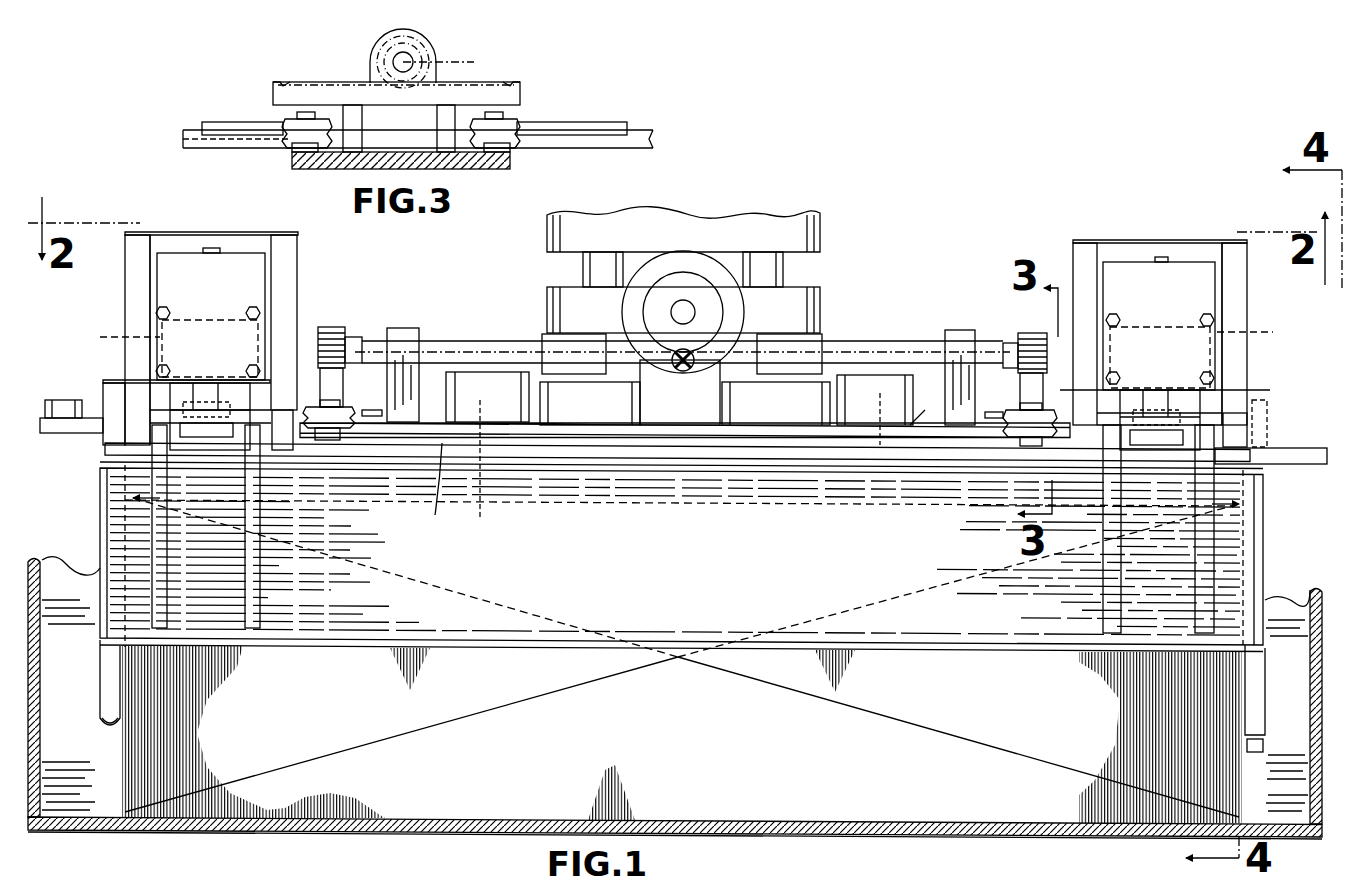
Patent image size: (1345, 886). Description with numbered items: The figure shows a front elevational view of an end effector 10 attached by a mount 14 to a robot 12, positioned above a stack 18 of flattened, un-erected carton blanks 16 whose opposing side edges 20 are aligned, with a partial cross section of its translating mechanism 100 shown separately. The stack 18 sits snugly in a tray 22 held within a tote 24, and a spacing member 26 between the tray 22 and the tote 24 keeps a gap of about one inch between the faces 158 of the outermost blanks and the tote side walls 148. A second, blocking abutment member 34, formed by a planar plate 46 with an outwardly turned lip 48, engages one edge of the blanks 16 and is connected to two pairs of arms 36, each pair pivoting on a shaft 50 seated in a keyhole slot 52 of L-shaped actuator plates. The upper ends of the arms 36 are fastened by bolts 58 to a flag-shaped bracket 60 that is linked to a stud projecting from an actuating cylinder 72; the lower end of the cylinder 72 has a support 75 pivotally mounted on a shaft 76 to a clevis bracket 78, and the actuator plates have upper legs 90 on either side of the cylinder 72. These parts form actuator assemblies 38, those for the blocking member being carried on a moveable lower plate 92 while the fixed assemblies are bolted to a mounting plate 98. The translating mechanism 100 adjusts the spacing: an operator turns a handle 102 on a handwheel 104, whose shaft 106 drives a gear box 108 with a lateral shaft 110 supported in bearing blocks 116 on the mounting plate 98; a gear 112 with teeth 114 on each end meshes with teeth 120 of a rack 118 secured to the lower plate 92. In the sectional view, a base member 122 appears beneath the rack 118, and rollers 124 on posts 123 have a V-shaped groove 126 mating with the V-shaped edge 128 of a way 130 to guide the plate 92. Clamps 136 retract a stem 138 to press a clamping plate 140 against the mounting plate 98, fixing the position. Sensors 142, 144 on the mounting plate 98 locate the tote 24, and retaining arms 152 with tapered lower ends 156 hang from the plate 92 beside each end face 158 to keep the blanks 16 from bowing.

In FIG. 1, the end effector 10 is at (982, 182).
In FIG. 1, the robot 12 is at (740, 213).
In FIG. 1, the mount 14 is at (790, 290).
In FIG. 1, the carton blanks 16 is at (1120, 830).
In FIG. 1, the stack 18 is at (262, 830).
In FIG. 1, the side edges 20 is at (395, 710).
In FIG. 1, the tray 22 is at (460, 818).
In FIG. 1, the tote 24 is at (448, 838).
In FIG. 1, the spacing member 26 is at (44, 565).
In FIG. 1, the second abutment member 34 is at (530, 646).
In FIG. 1, the arms 36 is at (240, 610).
In FIG. 1, the actuator assemblies 38 is at (240, 222).
In FIG. 1, the planar plate 46 is at (597, 567).
In FIG. 1, the lip 48 is at (672, 652).
In FIG. 1, the shaft 50 is at (206, 386).
In FIG. 1, the keyhole slot 52 is at (1238, 413).
In FIG. 1, the bolts 58 is at (246, 350).
In FIG. 1, the flag-shaped bracket 60 is at (203, 284).
In FIG. 1, the actuating cylinder 72 is at (694, 349).
In FIG. 1, the support 75 is at (240, 386).
In FIG. 1, the shaft 76 is at (150, 447).
In FIG. 1, the clevis bracket 78 is at (125, 470).
In FIG. 1, the upper legs 90 is at (299, 252).
In FIG. 3, the moveable lower plate 92 is at (488, 165).
In FIG. 1, the moveable lower plate 92 is at (400, 455).
In FIG. 1, the mounting plate 98 is at (615, 433).
In FIG. 3, the translating mechanism 100 is at (150, 99).
In FIG. 1, the translating mechanism 100 is at (862, 333).
In FIG. 1, the handle 102 is at (680, 369).
In FIG. 1, the handwheel 104 is at (703, 252).
In FIG. 1, the shaft 106 is at (692, 310).
In FIG. 1, the gear box 108 is at (640, 400).
In FIG. 3, the shaft 110 is at (409, 59).
In FIG. 1, the shaft 110 is at (505, 345).
In FIG. 3, the gear 112 is at (440, 64).
In FIG. 1, the gear 112 is at (346, 335).
In FIG. 3, the teeth 114 is at (465, 60).
In FIG. 1, the teeth 114 is at (332, 327).
In FIG. 3, the bearing block 116 is at (372, 57).
In FIG. 1, the bearing block 116 is at (410, 330).
In FIG. 3, the rack 118 is at (520, 97).
In FIG. 1, the rack 118 is at (343, 387).
In FIG. 3, the teeth 120 is at (512, 83).
In FIG. 3, the base block 122 is at (342, 169).
In FIG. 3, the posts 123 is at (300, 152).
In FIG. 1, the posts 123 is at (328, 440).
In FIG. 3, the rollers 124 is at (290, 119).
In FIG. 1, the rollers 124 is at (346, 432).
In FIG. 3, the V-shaped groove 126 is at (255, 141).
In FIG. 1, the V-shaped groove 126 is at (346, 440).
In FIG. 3, the V-shaped edge 128 is at (600, 131).
In FIG. 1, the V-shaped edge 128 is at (380, 416).
In FIG. 3, the way 130 is at (605, 125).
In FIG. 1, the way 130 is at (380, 412).
In FIG. 1, the clamps 136 is at (464, 370).
In FIG. 1, the stem 138 is at (692, 458).
In FIG. 1, the clamping plate 140 is at (684, 461).
In FIG. 1, the sensor 142 is at (1268, 400).
In FIG. 1, the sensor 144 is at (68, 400).
In FIG. 1, the tote side walls 148 is at (60, 603).
In FIG. 1, the retaining arms 152 is at (100, 682).
In FIG. 1, the tapered lower end 156 is at (106, 730).
In FIG. 1, the end face 158 is at (120, 748).